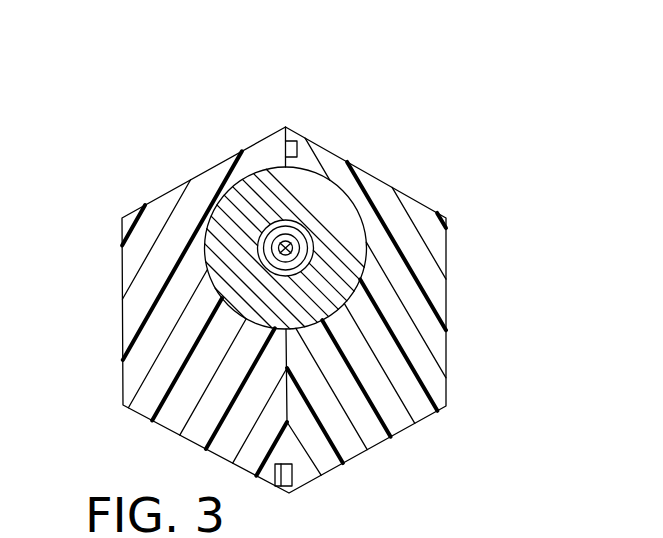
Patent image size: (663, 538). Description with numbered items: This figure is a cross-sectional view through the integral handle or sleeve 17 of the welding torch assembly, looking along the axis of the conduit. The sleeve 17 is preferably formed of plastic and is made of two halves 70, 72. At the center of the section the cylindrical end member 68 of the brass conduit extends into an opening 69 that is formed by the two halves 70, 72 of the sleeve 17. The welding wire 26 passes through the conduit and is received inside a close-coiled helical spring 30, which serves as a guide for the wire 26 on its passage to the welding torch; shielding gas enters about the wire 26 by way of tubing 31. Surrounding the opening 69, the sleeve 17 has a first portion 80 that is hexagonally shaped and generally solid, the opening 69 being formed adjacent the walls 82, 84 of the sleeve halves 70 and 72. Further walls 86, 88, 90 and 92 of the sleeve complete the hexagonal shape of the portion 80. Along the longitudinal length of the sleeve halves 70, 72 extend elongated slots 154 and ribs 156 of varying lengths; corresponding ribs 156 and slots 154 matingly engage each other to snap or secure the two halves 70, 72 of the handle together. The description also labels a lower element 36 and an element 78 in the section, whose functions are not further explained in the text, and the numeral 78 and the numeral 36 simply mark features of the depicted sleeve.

The integral handle or sleeve 17 is at (428, 281).
The welding wire 26 is at (265, 243).
The close-coiled helical spring 30 is at (267, 271).
The tubing 31 is at (273, 222).
The lower layer 36 is at (270, 480).
The cylindrical end member 68 is at (280, 226).
The opening 69 is at (238, 317).
The sleeve half 70 is at (382, 456).
The sleeve half 72 is at (227, 443).
The layer 78 is at (310, 480).
The first portion 80 is at (446, 357).
The wall 82 is at (372, 175).
The wall 84 is at (158, 195).
The wall 86 is at (447, 341).
The wall 88 is at (122, 310).
The wall 90 is at (374, 448).
The wall 92 is at (171, 432).
The elongated slot 154 is at (300, 145).
The rib 156 is at (292, 130).